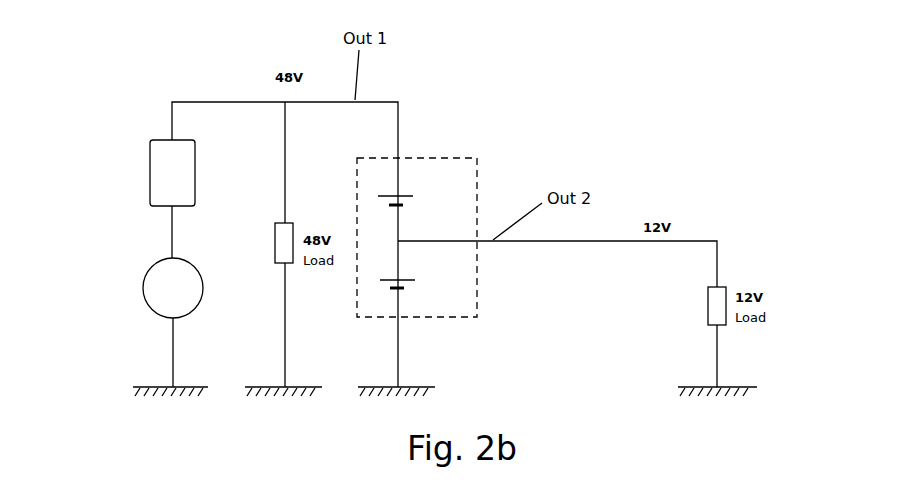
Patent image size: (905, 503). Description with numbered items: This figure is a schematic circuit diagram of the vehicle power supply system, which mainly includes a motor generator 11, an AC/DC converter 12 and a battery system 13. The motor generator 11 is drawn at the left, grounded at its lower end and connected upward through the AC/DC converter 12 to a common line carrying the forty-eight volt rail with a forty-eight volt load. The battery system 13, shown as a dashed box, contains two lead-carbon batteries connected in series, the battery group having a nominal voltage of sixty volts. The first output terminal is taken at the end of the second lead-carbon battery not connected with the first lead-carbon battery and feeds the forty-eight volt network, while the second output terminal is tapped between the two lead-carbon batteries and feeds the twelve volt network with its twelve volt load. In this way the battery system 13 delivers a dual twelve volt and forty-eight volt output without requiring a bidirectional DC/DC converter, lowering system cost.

The motor generator 11 is at (152, 275).
The AC/DC converter 12 is at (150, 142).
The battery system 13 is at (463, 157).